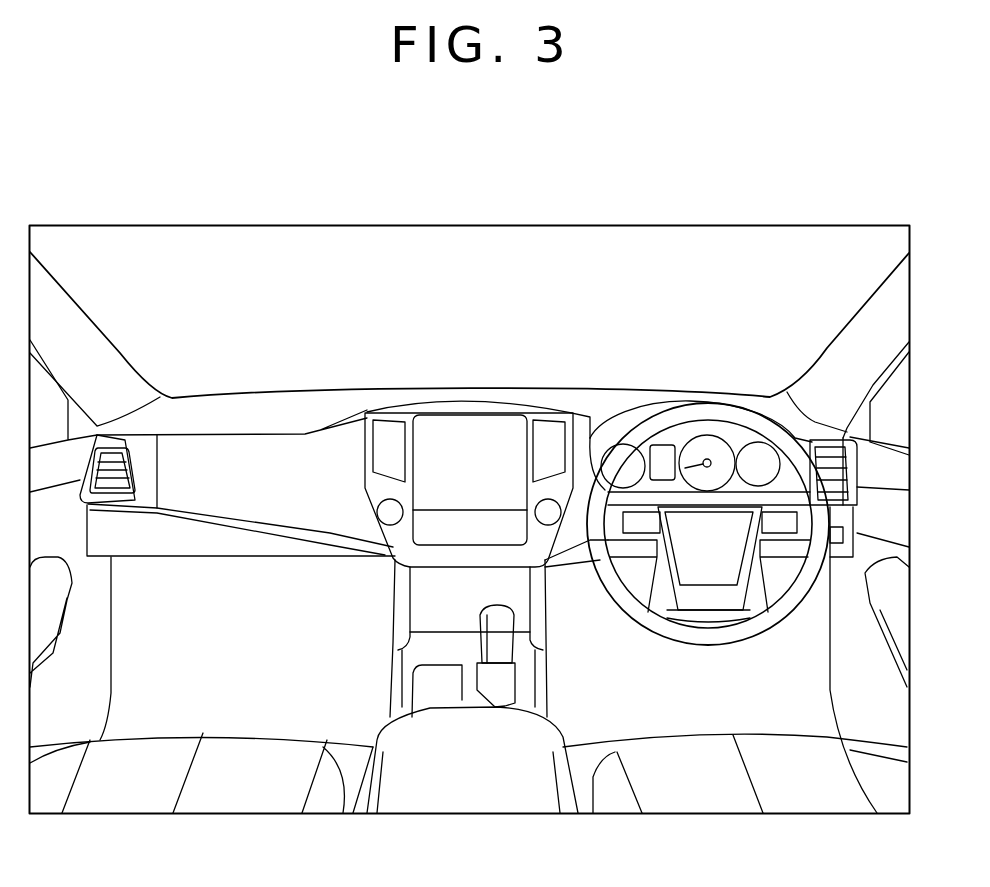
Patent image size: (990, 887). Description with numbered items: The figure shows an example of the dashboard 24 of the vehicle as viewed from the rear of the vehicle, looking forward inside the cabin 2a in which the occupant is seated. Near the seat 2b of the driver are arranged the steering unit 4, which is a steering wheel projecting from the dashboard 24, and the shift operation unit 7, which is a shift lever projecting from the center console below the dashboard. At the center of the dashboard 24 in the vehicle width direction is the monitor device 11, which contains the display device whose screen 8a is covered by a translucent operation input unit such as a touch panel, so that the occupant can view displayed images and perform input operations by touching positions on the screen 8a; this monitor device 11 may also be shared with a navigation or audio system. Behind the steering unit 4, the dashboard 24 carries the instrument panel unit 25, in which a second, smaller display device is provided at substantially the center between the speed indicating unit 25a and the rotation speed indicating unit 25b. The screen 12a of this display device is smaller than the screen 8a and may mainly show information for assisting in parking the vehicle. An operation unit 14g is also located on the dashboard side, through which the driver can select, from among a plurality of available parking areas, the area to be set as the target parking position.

The cabin 2a is at (254, 244).
The seat 2b is at (693, 800).
The steering unit 4 is at (740, 420).
The shift operation unit 7 is at (499, 647).
The screen 8a is at (497, 435).
The monitor device 11 is at (459, 388).
The screen 12a is at (662, 462).
The operation unit 14g is at (848, 536).
The dashboard 24 is at (355, 385).
The instrument panel unit 25 is at (679, 426).
The speed indicating unit 25a is at (603, 455).
The rotation speed indicating unit 25b is at (707, 450).